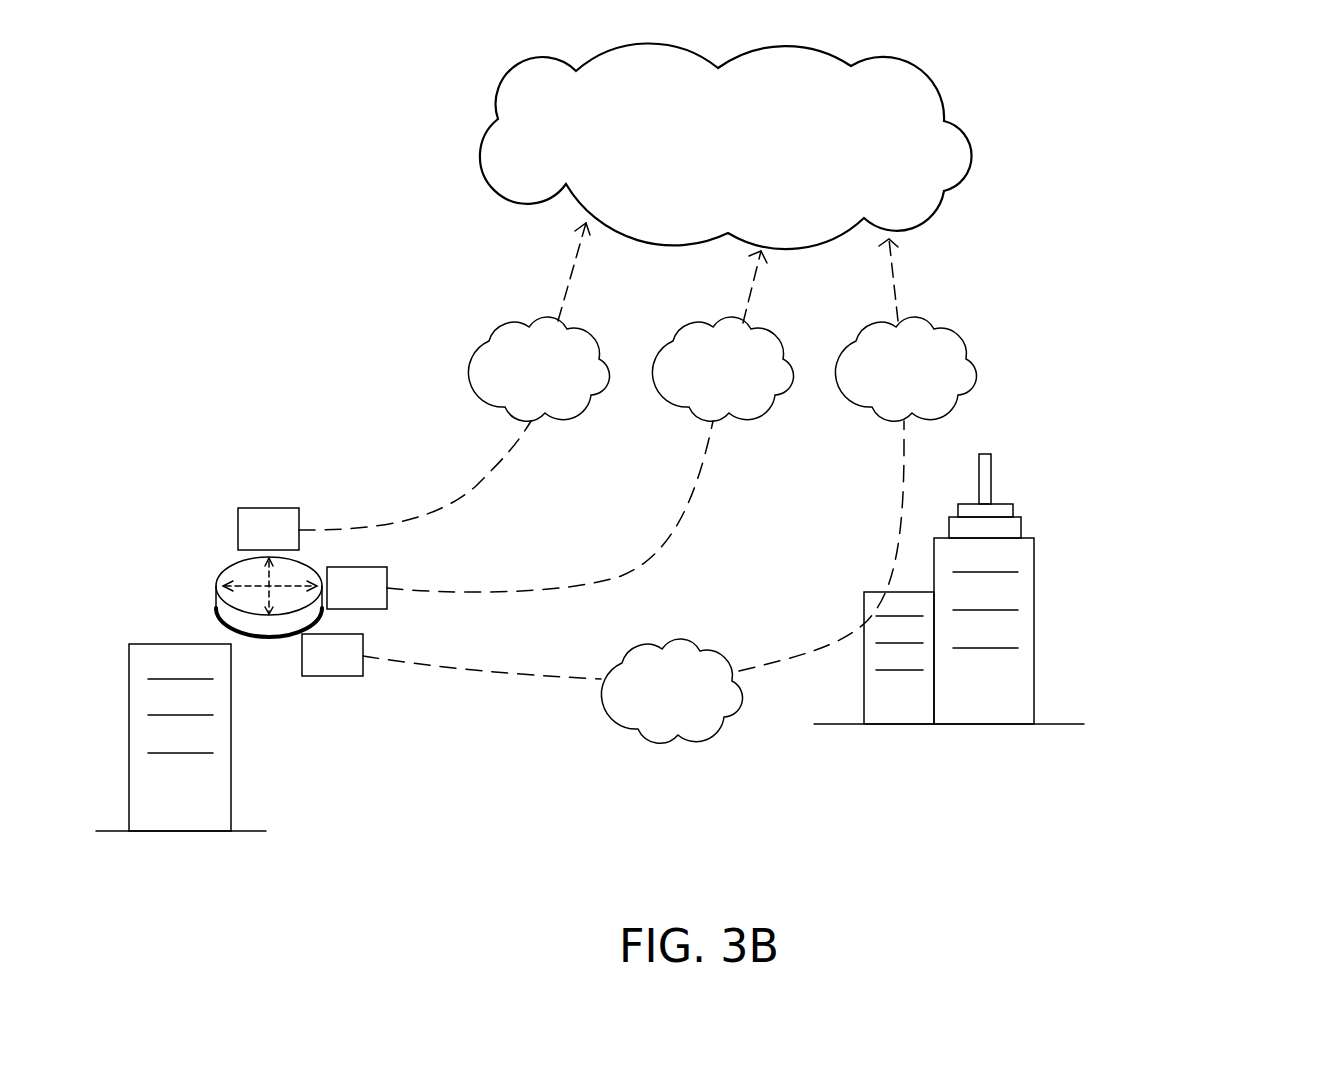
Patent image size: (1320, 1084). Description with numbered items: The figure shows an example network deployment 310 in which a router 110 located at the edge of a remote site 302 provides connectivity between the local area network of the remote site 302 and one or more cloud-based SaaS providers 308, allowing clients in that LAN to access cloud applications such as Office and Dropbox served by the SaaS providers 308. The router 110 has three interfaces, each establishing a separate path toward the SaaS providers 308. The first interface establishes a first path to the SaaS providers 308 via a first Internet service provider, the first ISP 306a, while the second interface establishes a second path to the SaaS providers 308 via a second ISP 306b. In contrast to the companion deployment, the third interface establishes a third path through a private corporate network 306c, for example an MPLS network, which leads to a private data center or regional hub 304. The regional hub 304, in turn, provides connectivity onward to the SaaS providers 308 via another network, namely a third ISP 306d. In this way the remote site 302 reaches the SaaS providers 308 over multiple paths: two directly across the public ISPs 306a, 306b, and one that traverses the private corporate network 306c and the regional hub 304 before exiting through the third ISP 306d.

The router 110 is at (213, 595).
The remote site 302 is at (181, 786).
The regional hub 304 is at (949, 638).
The ISP 1 306a is at (510, 394).
The second ISP 306b is at (694, 394).
The private corporate network 306c is at (644, 716).
The third ISP 306d is at (877, 394).
The SaaS provider 308 is at (712, 181).
The network deployment 310 is at (1228, 118).